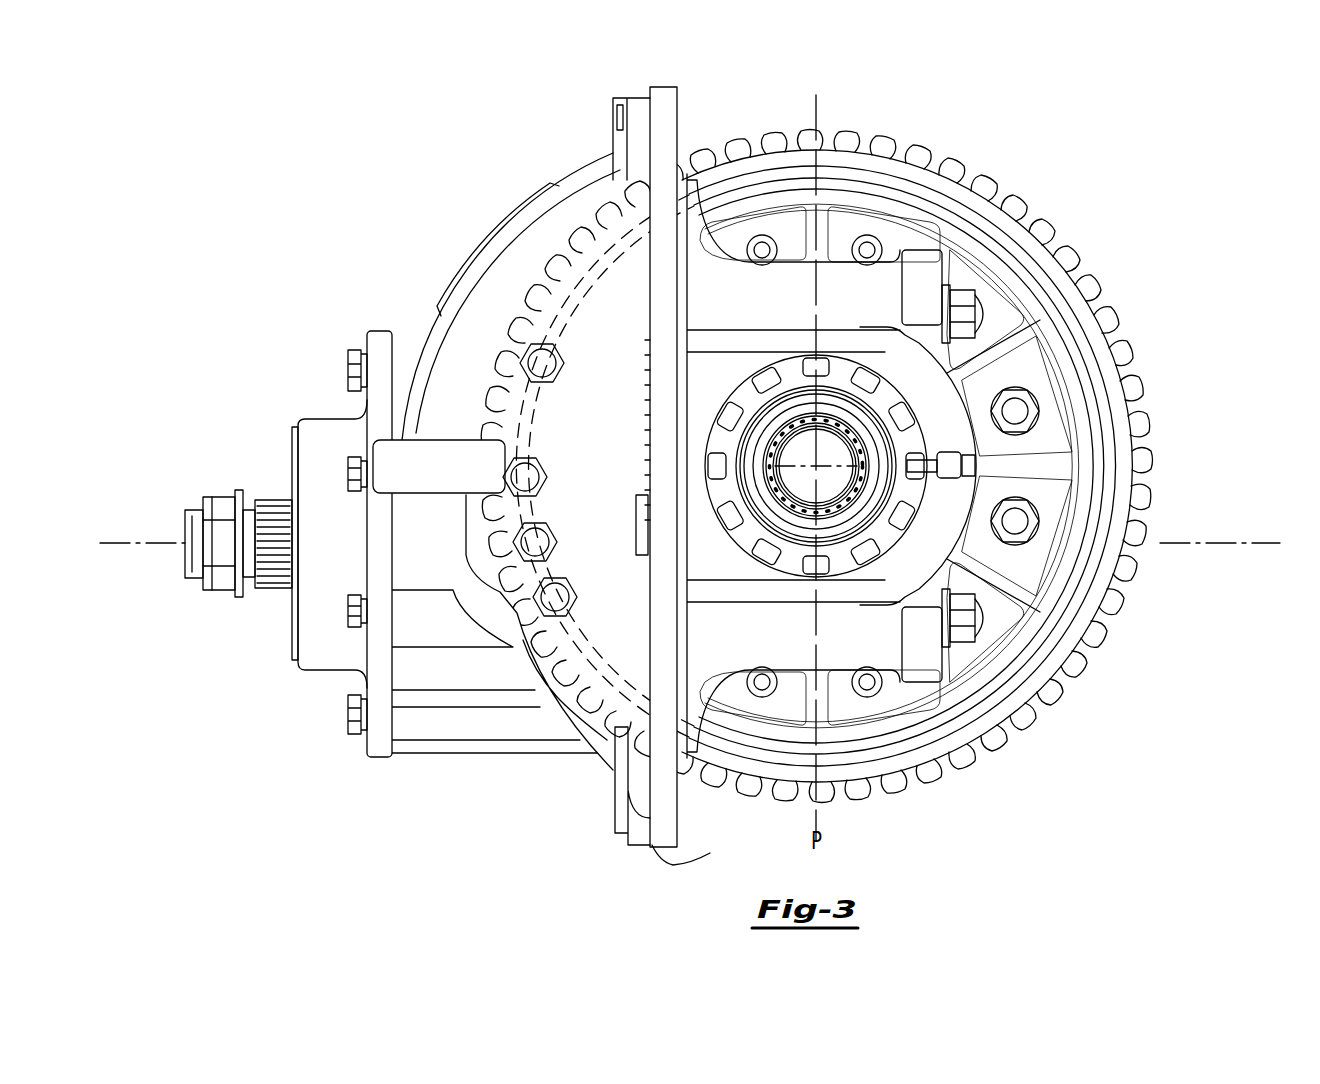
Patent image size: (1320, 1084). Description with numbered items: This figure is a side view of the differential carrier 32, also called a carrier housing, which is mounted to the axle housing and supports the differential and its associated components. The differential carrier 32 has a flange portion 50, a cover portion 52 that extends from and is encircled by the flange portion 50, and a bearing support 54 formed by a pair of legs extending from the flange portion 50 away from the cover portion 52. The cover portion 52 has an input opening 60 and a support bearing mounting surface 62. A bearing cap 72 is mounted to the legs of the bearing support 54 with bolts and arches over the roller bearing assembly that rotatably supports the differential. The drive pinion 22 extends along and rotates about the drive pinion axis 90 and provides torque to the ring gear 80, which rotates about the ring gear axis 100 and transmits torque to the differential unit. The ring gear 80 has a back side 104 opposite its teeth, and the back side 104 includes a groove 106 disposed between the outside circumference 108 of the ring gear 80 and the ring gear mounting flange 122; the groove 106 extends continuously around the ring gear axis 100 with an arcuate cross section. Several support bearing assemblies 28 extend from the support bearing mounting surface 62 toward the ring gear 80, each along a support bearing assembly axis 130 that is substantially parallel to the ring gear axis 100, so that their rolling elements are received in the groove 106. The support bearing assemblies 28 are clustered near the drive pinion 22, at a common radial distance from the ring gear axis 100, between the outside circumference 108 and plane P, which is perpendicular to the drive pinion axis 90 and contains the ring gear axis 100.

The drive pinion 22 is at (190, 510).
The support bearing assembly 28 is at (542, 448).
The differential carrier 32 is at (575, 165).
The flange portion 50 is at (665, 858).
The cover portion 52 is at (478, 250).
The bearing support 54 is at (873, 272).
The input opening 60 is at (290, 469).
The support bearing mounting surface 62 is at (622, 360).
The bearing cap 72 is at (1000, 448).
The ring gear 80 is at (1095, 283).
The drive pinion axis 90 is at (106, 540).
The ring gear axis 100 is at (805, 463).
The back side 104 is at (1100, 345).
The groove 106 is at (990, 235).
The outside circumference 108 is at (1093, 280).
The ring gear mounting flange 122 is at (1015, 660).
The support bearing assembly axis 130 is at (533, 355).